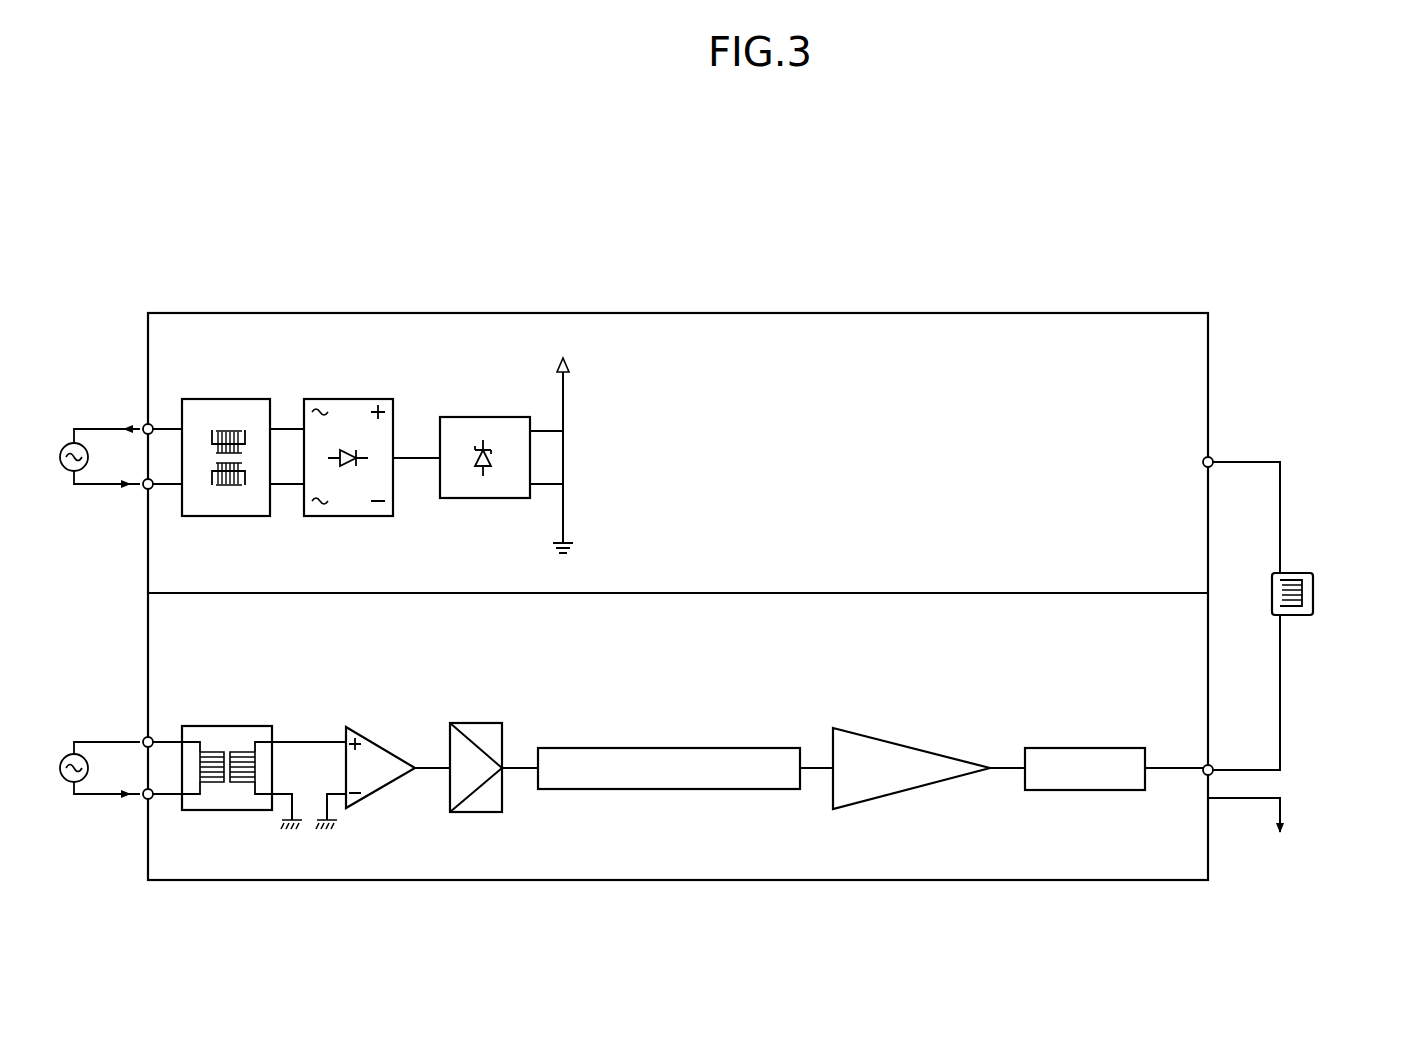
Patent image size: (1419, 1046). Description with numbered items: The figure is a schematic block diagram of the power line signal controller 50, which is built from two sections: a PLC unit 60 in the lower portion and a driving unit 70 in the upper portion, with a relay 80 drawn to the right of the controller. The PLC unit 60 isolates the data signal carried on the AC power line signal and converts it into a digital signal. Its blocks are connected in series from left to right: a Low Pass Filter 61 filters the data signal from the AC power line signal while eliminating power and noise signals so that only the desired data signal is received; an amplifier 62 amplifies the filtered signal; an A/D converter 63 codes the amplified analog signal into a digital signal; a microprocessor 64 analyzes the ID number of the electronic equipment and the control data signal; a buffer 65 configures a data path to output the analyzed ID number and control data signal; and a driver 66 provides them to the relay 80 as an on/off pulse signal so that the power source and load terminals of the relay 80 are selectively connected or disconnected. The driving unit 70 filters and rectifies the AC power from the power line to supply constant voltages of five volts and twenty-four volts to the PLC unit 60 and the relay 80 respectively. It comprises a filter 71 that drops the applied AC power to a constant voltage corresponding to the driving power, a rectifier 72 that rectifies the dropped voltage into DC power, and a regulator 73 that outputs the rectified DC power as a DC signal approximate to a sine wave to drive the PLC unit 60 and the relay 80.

The power line signal controller 50 is at (678, 524).
The PLC unit 60 is at (678, 731).
The Low Pass Filter (LPF) 61 is at (225, 810).
The amplifier 62 is at (380, 795).
The A/D converter 63 is at (474, 812).
The microprocessor 64 is at (578, 789).
The buffer 65 is at (950, 790).
The driver 66 is at (1083, 790).
The driving unit 70 is at (555, 455).
The filter 71 is at (225, 516).
The rectifier 72 is at (347, 516).
The regulator 73 is at (482, 498).
The relay 80 is at (1344, 569).